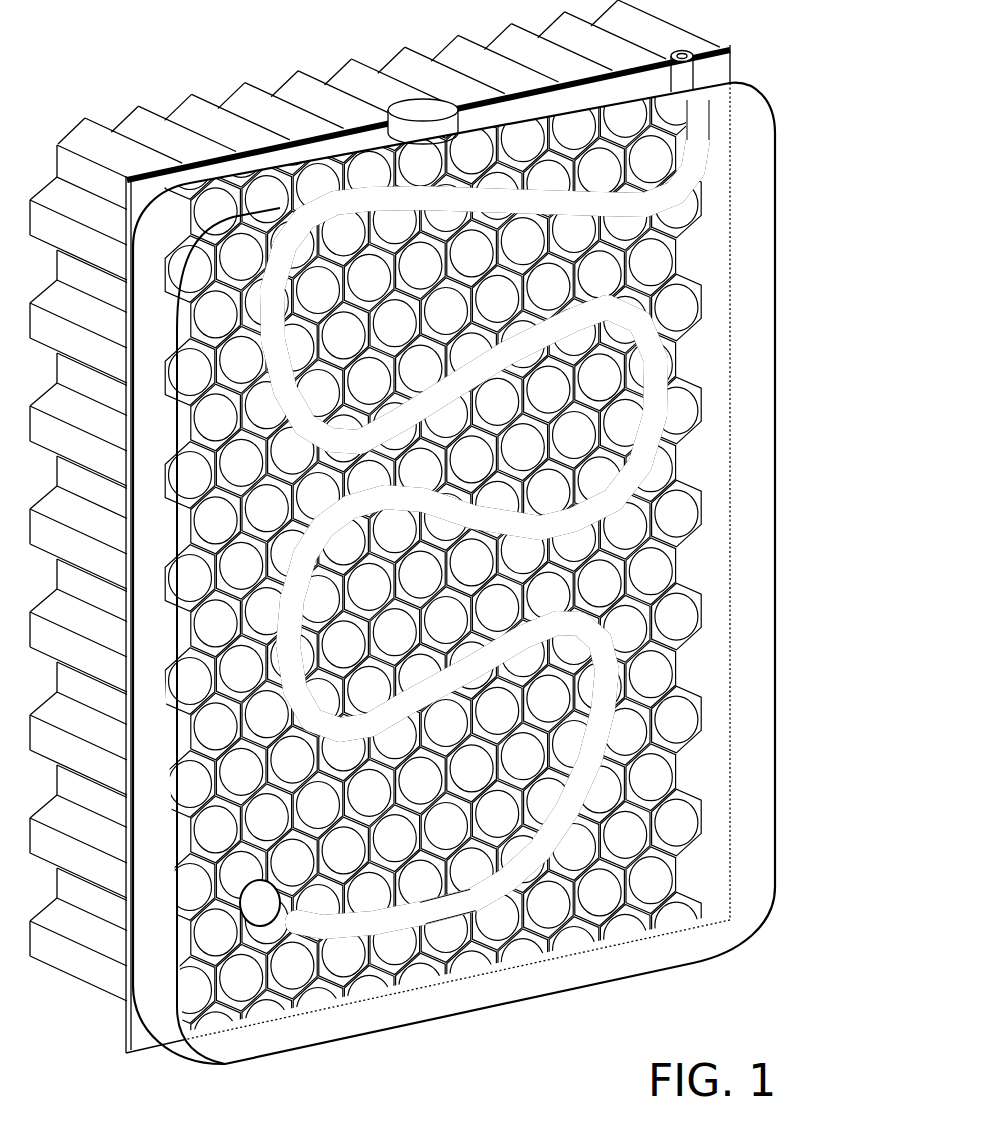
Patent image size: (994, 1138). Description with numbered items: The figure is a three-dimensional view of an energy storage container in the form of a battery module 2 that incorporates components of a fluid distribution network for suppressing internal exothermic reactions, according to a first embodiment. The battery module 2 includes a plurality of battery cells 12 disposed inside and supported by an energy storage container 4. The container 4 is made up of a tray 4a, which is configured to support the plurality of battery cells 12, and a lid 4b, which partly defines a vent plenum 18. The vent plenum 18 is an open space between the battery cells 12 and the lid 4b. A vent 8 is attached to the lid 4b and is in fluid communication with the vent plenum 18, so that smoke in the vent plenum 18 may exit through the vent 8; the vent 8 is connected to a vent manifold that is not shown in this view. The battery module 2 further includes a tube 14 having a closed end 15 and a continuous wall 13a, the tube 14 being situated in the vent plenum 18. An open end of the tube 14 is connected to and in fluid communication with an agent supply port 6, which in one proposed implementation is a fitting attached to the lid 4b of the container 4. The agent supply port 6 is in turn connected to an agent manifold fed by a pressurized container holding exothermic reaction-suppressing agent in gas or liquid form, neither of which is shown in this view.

The battery module 2 is at (440, 569).
The energy storage container 4 is at (373, 555).
The tray 4a is at (593, 30).
The lid 4b is at (207, 1062).
The agent supply port 6 is at (690, 48).
The vent 8 is at (406, 100).
The battery cells 12 is at (702, 303).
The continuous wall 13a is at (702, 162).
The tube 14 is at (565, 598).
The closed end 15 is at (291, 936).
The vent plenum 18 is at (498, 569).